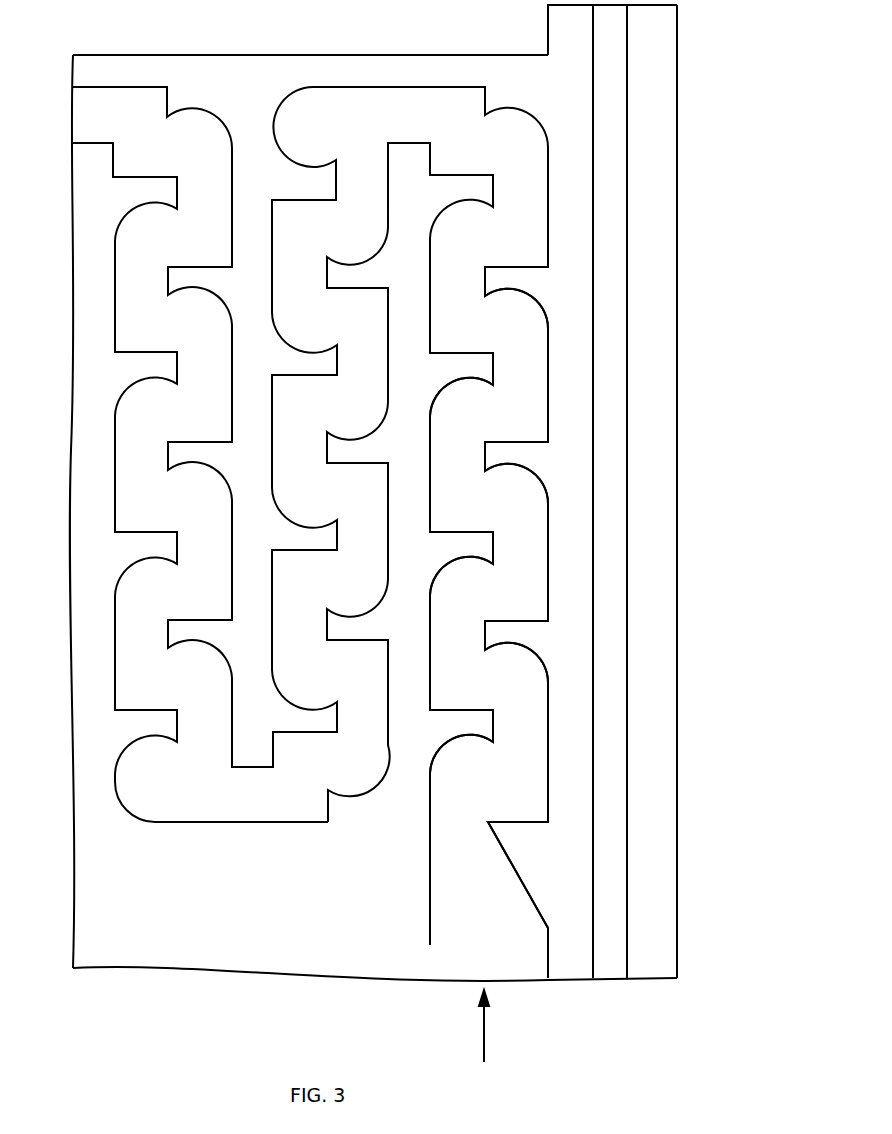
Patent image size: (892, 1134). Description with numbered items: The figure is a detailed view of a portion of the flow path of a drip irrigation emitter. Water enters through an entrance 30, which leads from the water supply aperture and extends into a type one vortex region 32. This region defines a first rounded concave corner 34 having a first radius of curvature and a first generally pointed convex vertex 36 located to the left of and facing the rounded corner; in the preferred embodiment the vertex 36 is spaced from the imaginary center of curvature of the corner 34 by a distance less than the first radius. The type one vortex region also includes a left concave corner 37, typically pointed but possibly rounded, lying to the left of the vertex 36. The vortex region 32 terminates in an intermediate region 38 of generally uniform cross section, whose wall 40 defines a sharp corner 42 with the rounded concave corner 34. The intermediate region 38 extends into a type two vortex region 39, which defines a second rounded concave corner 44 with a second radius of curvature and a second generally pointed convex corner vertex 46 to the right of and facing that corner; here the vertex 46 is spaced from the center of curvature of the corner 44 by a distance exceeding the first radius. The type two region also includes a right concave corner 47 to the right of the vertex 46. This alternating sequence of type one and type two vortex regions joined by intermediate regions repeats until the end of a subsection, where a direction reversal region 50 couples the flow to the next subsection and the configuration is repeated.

The entrance 30 is at (487, 881).
The type one vortex region 32 is at (508, 672).
The first rounded concave corner 34 is at (497, 326).
The first generally substantially pointed convex vertex 36 is at (440, 708).
The left concave corner 37 is at (467, 583).
The intermediate region 38 is at (452, 632).
The type two vortex region 39 is at (467, 406).
The wall 40 is at (485, 623).
The sharp corner 42 is at (530, 650).
The second rounded concave corner 44 is at (473, 588).
The second generally pointed convex corner vertex 46 is at (487, 620).
The right concave corner 47 is at (485, 640).
The direction reversal region 50 is at (392, 108).